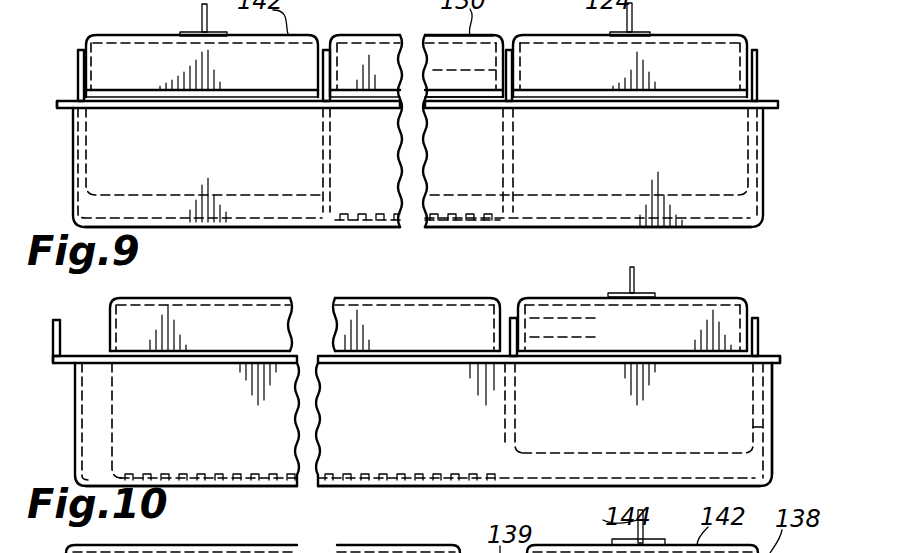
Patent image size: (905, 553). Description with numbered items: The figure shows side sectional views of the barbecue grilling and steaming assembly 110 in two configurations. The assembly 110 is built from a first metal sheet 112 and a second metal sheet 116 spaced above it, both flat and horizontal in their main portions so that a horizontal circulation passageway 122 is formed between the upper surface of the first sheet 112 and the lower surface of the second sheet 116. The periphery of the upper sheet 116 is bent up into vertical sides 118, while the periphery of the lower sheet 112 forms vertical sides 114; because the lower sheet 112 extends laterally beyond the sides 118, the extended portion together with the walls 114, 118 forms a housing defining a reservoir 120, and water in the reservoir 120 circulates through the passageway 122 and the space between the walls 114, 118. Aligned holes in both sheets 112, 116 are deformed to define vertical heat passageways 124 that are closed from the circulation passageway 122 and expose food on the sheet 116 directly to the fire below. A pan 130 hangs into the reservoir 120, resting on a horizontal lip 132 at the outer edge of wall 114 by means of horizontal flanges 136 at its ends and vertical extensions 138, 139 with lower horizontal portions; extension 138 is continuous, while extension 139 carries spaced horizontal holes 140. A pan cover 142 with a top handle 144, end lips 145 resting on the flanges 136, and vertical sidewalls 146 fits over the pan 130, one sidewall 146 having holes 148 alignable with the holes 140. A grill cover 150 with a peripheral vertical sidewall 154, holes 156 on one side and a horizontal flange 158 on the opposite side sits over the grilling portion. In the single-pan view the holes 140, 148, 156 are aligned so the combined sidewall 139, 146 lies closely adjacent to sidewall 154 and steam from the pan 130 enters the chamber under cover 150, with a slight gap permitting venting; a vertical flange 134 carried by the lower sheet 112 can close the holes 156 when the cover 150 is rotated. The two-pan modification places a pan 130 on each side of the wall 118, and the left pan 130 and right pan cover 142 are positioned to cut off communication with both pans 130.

In FIG. 10, the assembly 110 is at (770, 327).
In FIG. 9, the first metal sheet 112 is at (470, 228).
In FIG. 10, the first metal sheet 112 is at (418, 487).
In FIG. 9, the vertical sides 114 is at (764, 196).
In FIG. 10, the vertical sides 114 is at (75, 432).
In FIG. 9, the second metal sheet 116 is at (337, 228).
In FIG. 10, the second metal sheet 116 is at (255, 486).
In FIG. 9, the vertical sides 118 is at (290, 227).
In FIG. 10, the vertical sides 118 is at (112, 398).
In FIG. 9, the reservoir 120 is at (68, 216).
In FIG. 10, the reservoir 120 is at (770, 470).
In FIG. 9, the circulation passageway 122 is at (500, 214).
In FIG. 10, the circulation passageway 122 is at (500, 480).
In FIG. 9, the heat passageways 124 is at (390, 226).
In FIG. 10, the heat passageways 124 is at (350, 487).
In FIG. 9, the pan 130 is at (327, 167).
In FIG. 10, the pan 130 is at (775, 420).
In FIG. 9, the horizontal lip 132 is at (58, 104).
In FIG. 10, the horizontal lip 132 is at (772, 358).
In FIG. 10, the vertical flange 134 is at (53, 335).
In FIG. 9, the horizontal flange 136 is at (153, 100).
In FIG. 10, the horizontal flange 136 is at (547, 358).
In FIG. 9, the vertical extension 138 is at (758, 57).
In FIG. 10, the vertical extension 138 is at (756, 316).
In FIG. 9, the vertical extension 139 is at (78, 57).
In FIG. 10, the vertical extension 139 is at (512, 318).
In FIG. 9, the holes 140 is at (78, 73).
In FIG. 10, the holes 140 is at (500, 355).
In FIG. 9, the cover 142 is at (749, 40).
In FIG. 10, the cover 142 is at (688, 293).
In FIG. 9, the top handle 144 is at (201, 8).
In FIG. 10, the top handle 144 is at (655, 263).
In FIG. 9, the horizontal lip 145 is at (216, 98).
In FIG. 10, the horizontal lip 145 is at (680, 358).
In FIG. 9, the vertical sidewalls 146 is at (300, 63).
In FIG. 10, the vertical sidewalls 146 is at (520, 317).
In FIG. 9, the holes 148 is at (317, 78).
In FIG. 10, the holes 148 is at (520, 337).
In FIG. 10, the cover 150 is at (242, 343).
In FIG. 9, the vertical sidewall 154 is at (495, 52).
In FIG. 10, the vertical sidewall 154 is at (495, 310).
In FIG. 9, the holes 156 is at (503, 76).
In FIG. 10, the holes 156 is at (505, 335).
In FIG. 9, the horizontal flange 158 is at (470, 108).
In FIG. 10, the horizontal flange 158 is at (82, 352).